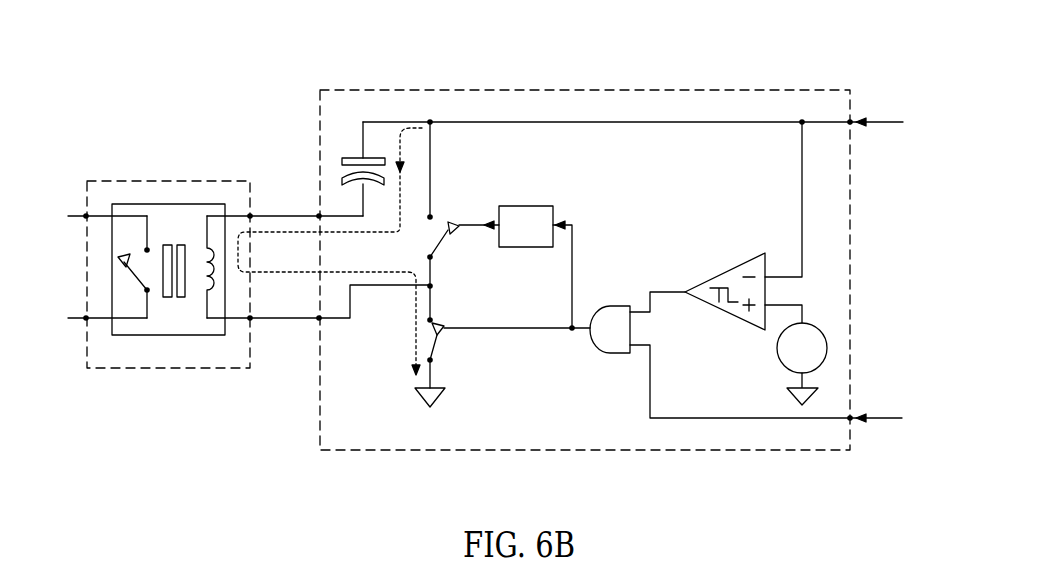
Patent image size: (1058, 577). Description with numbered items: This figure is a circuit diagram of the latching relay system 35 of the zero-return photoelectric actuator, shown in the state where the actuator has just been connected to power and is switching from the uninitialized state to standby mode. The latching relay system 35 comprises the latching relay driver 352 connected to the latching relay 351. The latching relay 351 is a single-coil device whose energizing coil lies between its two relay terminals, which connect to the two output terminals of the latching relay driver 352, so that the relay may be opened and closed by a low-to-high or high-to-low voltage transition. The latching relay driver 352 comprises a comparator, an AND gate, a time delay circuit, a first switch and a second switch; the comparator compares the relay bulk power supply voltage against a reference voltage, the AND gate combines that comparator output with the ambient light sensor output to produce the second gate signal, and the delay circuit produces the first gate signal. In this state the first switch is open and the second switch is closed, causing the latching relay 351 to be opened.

The latching relay system 35 is at (813, 50).
The latching relay 351 is at (167, 181).
The latching relay driver 352 is at (515, 90).